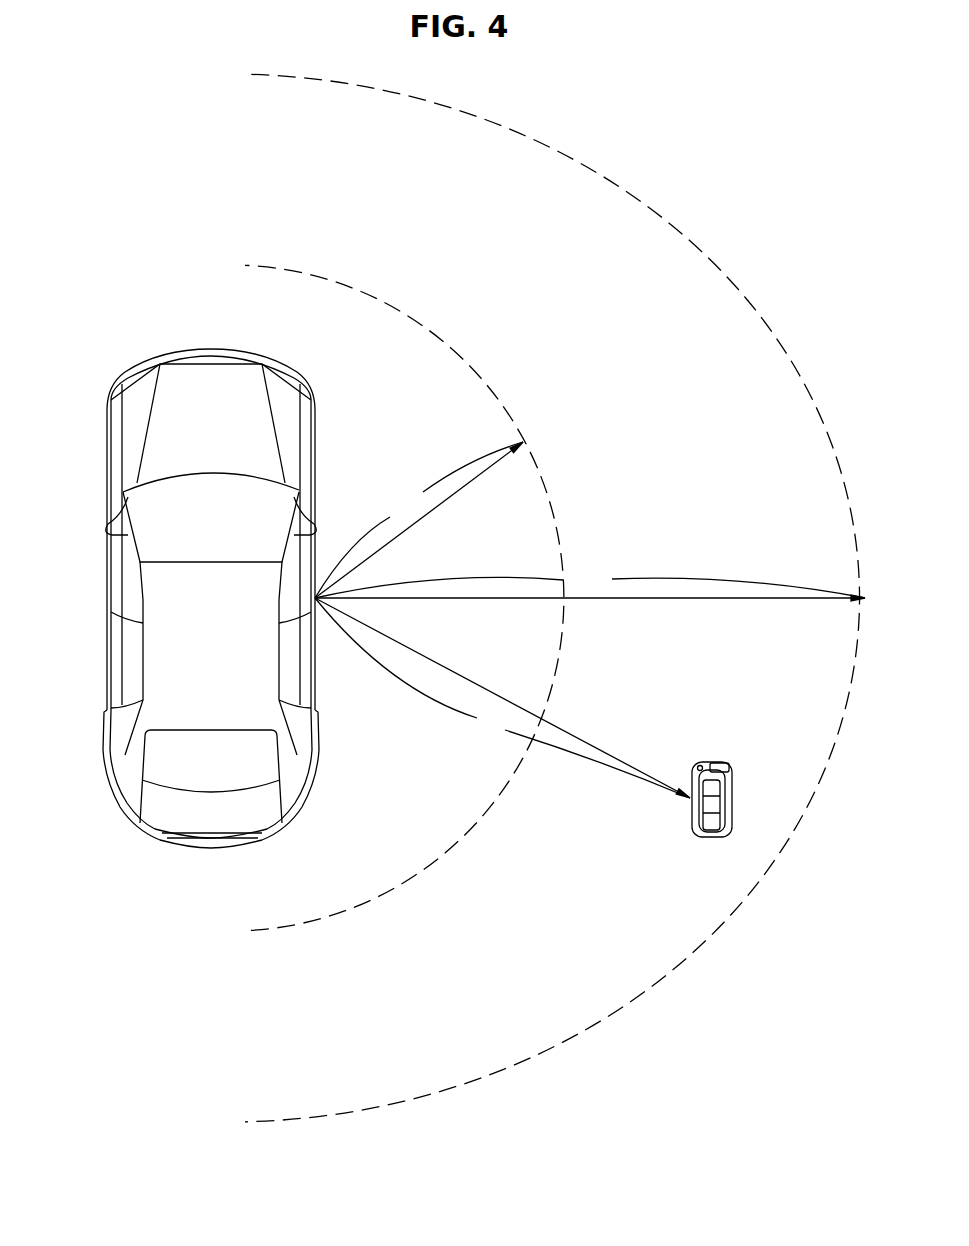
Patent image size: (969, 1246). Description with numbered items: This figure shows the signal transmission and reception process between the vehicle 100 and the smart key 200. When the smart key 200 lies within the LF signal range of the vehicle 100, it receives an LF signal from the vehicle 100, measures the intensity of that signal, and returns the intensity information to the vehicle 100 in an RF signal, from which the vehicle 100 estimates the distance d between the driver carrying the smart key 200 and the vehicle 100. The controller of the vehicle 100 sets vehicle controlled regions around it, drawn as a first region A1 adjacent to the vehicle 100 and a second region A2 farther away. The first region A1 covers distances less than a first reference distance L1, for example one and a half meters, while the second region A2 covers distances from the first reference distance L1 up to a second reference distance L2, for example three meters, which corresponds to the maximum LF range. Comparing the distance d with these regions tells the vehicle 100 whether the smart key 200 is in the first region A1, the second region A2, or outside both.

The vehicle 100 is at (130, 592).
The smart key 200 is at (729, 763).
The first region A1 is at (381, 299).
The second region A2 is at (634, 195).
The first reference distance L1 is at (419, 520).
The second reference distance L2 is at (590, 580).
The distance d is at (502, 698).